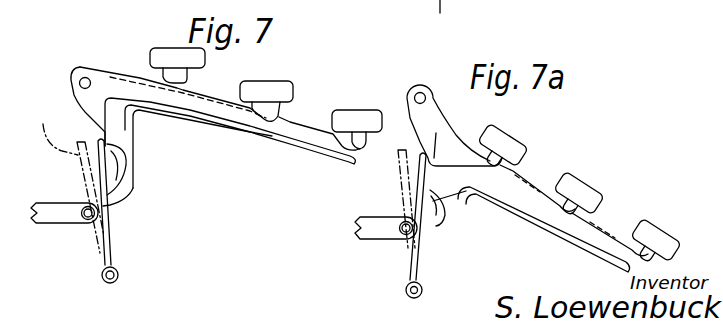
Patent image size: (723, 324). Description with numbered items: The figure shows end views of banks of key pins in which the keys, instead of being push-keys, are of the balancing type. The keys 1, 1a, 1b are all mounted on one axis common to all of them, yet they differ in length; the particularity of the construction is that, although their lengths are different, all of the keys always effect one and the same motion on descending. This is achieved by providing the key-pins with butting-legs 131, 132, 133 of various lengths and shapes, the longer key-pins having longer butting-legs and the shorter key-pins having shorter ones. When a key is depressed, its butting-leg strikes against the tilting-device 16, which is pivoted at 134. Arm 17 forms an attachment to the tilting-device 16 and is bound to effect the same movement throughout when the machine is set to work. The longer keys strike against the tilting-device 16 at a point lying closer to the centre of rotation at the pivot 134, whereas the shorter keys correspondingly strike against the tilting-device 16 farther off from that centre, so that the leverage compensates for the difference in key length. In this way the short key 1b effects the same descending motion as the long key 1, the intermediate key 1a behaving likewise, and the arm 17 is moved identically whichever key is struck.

In FIG. 7, the key 1 is at (183, 81).
In FIG. 7A, the key 1 is at (499, 148).
In FIG. 7, the key 1a is at (274, 113).
In FIG. 7A, the key 1a is at (571, 202).
In FIG. 7, the key 1b is at (366, 144).
In FIG. 7A, the key 1b is at (648, 253).
In FIG. 7, the tilting-device 16 is at (100, 137).
In FIG. 7A, the tilting-device 16 is at (423, 157).
In FIG. 7, the arm 17 is at (50, 213).
In FIG. 7A, the arm 17 is at (372, 227).
In FIG. 7, the butting-leg 131 is at (110, 127).
In FIG. 7A, the butting-leg 131 is at (438, 167).
In FIG. 7, the butting-leg 132 is at (123, 158).
In FIG. 7A, the butting-leg 132 is at (428, 210).
In FIG. 7, the butting-leg 133 is at (123, 190).
In FIG. 7A, the butting-leg 133 is at (430, 226).
In FIG. 7, the pivot 134 is at (102, 275).
In FIG. 7A, the pivot 134 is at (412, 300).